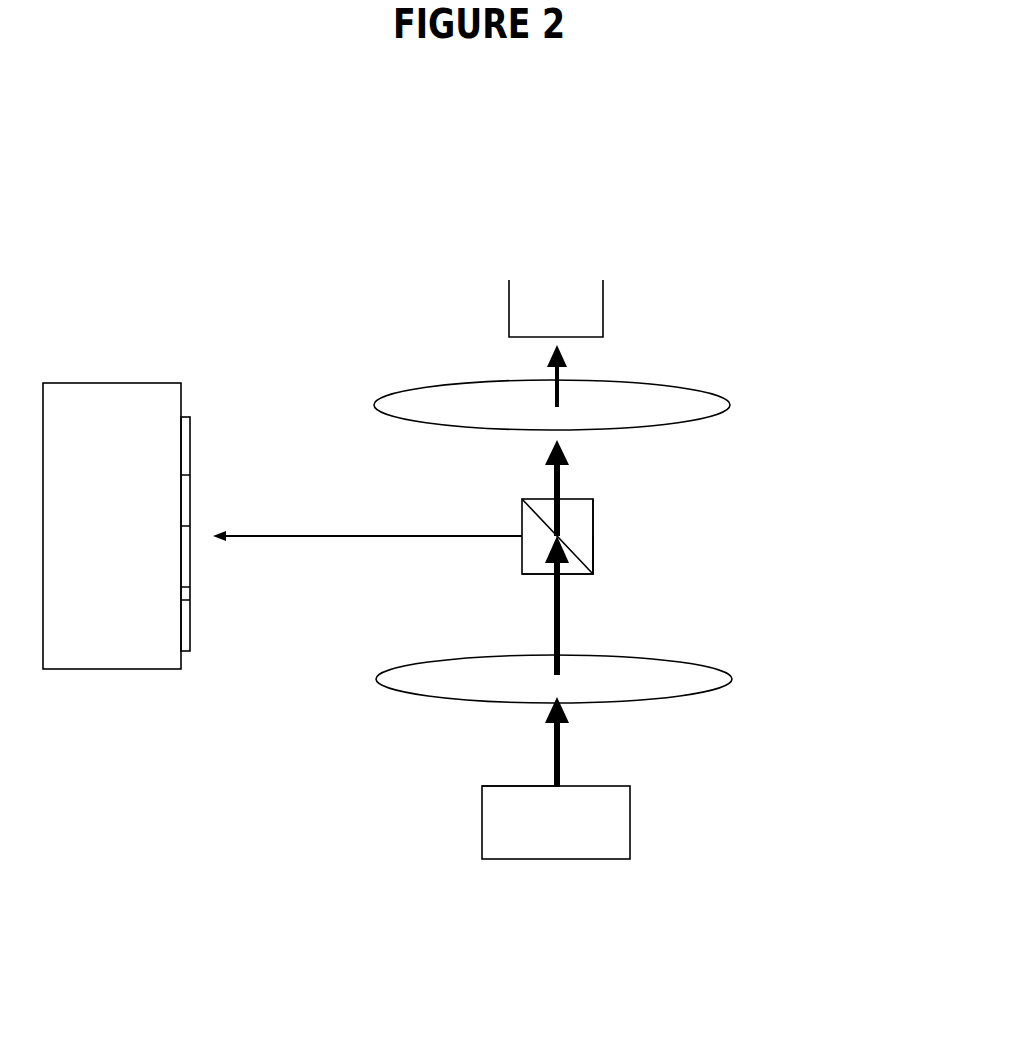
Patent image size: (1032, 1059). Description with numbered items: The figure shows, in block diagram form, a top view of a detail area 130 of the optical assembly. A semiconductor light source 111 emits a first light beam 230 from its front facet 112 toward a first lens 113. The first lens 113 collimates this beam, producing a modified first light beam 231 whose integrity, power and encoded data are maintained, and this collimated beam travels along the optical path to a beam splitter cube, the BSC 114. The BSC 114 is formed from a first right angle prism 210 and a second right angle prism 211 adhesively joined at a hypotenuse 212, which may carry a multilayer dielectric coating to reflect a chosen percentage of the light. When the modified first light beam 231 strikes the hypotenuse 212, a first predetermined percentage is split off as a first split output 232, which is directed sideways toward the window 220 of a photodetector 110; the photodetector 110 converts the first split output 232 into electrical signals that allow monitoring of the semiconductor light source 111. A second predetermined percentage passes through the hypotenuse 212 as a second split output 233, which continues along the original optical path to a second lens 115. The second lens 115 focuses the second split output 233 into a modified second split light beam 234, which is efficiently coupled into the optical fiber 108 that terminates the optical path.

The detail area 130 is at (803, 117).
The photodetector 110 is at (63, 403).
The window 220 is at (190, 460).
The first split output 232 is at (318, 537).
The first right angle prism 210 is at (532, 552).
The hypotenuse 212 is at (525, 512).
The second right angle prism 211 is at (577, 530).
The BSC 114 is at (595, 543).
The second split output 233 is at (558, 478).
The modified second split light beam 234 is at (558, 378).
The second lens 115 is at (730, 402).
The optical fiber 108 is at (583, 313).
The modified first light beam 231 is at (560, 628).
The first lens 113 is at (732, 680).
The first light beam 230 is at (563, 763).
The front facet 112 is at (542, 782).
The semiconductor light source 111 is at (487, 852).